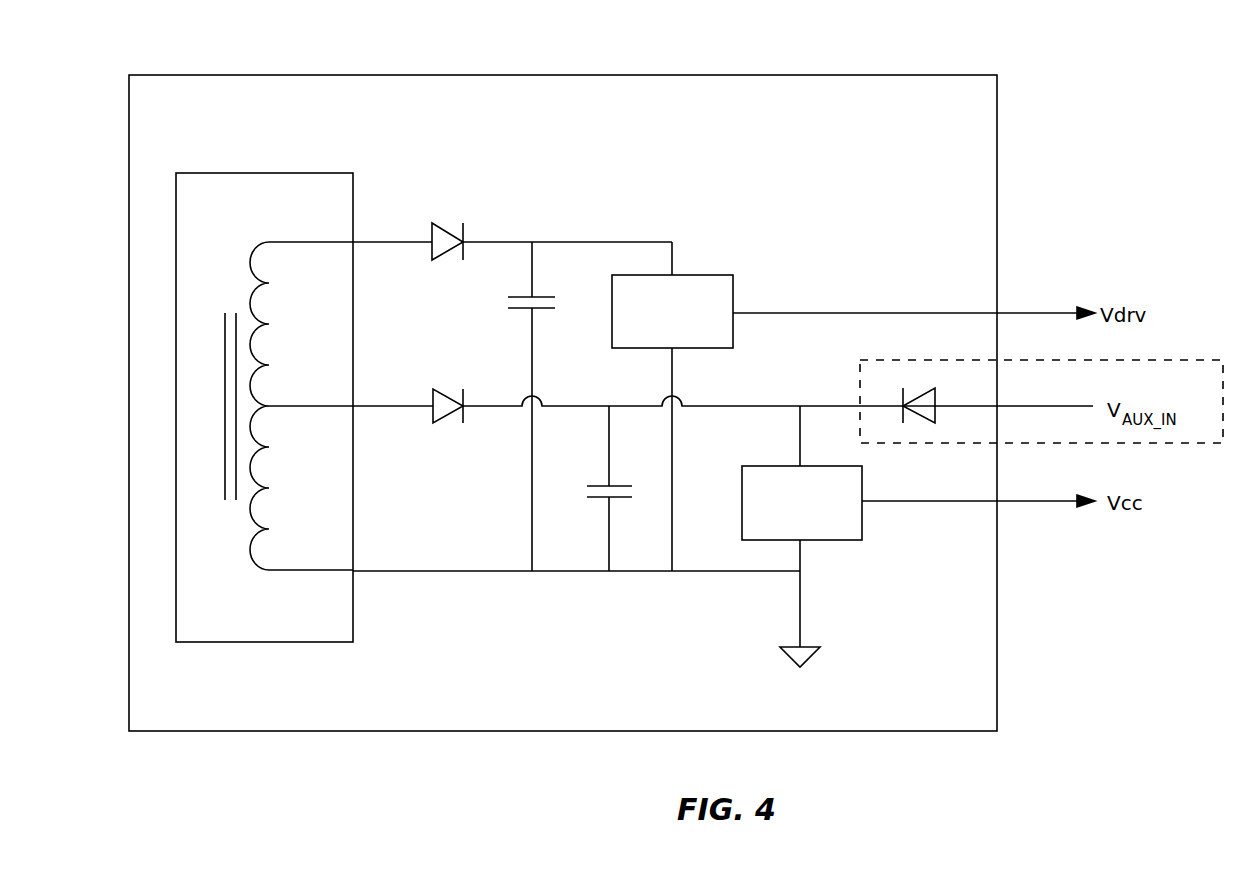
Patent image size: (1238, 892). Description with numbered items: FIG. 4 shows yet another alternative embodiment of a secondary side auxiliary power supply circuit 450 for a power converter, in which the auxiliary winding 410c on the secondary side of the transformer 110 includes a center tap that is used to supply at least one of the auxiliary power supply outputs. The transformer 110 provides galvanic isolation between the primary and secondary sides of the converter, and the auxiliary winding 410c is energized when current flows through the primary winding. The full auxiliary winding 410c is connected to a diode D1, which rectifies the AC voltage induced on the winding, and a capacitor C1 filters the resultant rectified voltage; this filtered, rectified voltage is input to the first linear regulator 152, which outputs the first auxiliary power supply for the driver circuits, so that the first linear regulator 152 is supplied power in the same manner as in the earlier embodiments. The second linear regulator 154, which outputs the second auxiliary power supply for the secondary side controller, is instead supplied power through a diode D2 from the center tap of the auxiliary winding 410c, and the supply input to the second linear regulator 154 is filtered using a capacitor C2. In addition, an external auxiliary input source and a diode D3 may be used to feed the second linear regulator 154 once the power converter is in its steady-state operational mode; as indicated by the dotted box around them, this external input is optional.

The secondary side auxiliary power supply circuit 450 is at (563, 387).
The transformer 110 is at (264, 391).
The auxiliary winding 410c is at (301, 427).
The first linear regulator 152 is at (672, 297).
The second linear regulator 154 is at (802, 489).
The diode D1 is at (448, 223).
The diode D2 is at (449, 424).
The diode D3 is at (1041, 401).
The capacitor C1 is at (524, 406).
The capacitor C2 is at (598, 488).